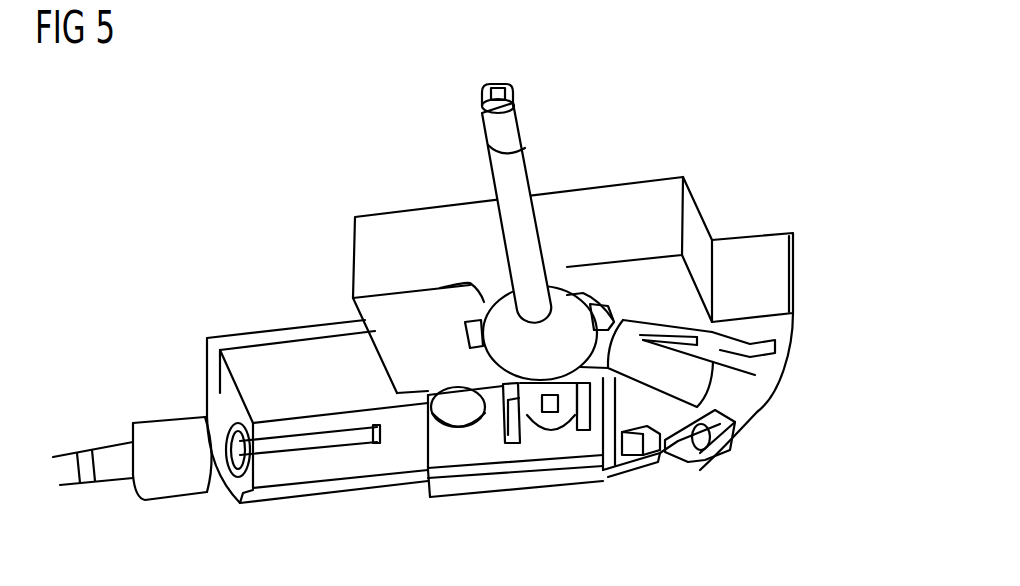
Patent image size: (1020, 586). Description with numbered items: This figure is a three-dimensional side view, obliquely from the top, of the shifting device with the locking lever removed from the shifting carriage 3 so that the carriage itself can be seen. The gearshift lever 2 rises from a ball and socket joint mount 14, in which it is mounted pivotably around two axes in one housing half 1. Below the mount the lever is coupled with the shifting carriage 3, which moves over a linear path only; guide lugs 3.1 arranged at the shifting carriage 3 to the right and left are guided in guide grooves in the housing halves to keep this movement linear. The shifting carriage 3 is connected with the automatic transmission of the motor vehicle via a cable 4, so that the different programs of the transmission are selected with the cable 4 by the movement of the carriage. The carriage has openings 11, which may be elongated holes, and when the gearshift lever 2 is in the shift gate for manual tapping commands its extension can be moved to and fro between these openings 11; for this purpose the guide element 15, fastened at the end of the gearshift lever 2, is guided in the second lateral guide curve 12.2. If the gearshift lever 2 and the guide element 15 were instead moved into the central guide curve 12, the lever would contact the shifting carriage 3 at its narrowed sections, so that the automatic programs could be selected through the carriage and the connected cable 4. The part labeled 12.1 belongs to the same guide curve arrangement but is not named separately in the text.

The housing half 1 is at (395, 258).
The gearshift lever 2 is at (512, 132).
The shifting carriage 3 is at (435, 448).
The guide lugs 3.1 is at (480, 480).
The cable 4 is at (397, 430).
The openings 11 is at (509, 441).
The central guide curve 12 is at (763, 403).
The locking clip 12.1 is at (713, 455).
The second lateral guide curve 12.2 is at (727, 353).
The ball and socket joint mount 14 is at (560, 323).
The guide element 15 is at (663, 365).